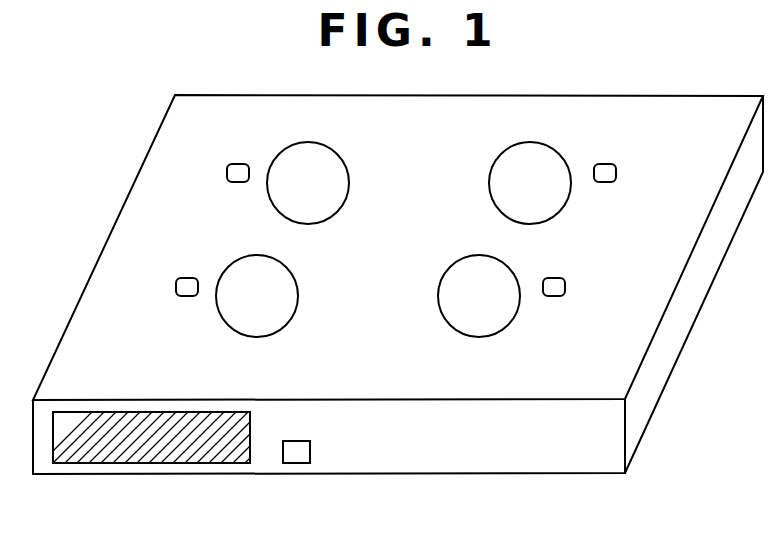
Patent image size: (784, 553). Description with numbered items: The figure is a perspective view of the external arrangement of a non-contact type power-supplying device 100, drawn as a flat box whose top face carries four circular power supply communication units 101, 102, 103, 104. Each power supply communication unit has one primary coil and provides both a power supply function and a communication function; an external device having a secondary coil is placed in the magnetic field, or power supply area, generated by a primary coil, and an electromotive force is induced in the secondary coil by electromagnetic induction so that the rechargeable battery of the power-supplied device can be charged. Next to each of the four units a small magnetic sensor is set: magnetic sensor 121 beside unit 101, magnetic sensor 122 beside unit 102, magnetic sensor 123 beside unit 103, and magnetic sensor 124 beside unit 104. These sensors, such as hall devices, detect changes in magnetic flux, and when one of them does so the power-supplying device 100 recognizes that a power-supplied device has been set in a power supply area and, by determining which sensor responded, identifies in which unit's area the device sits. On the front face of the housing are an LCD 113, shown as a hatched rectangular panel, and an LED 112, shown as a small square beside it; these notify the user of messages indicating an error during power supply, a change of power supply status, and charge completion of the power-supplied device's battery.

The power-supplying device 100 is at (684, 54).
The power supply communication unit 101 is at (289, 144).
The power supply communication unit 102 is at (272, 337).
The power supply communication unit 103 is at (510, 144).
The power supply communication unit 104 is at (493, 337).
The LED 112 is at (297, 463).
The LCD 113 is at (140, 463).
The magnetic sensor 121 is at (226, 173).
The magnetic sensor 122 is at (175, 287).
The magnetic sensor 123 is at (617, 173).
The magnetic sensor 124 is at (566, 287).